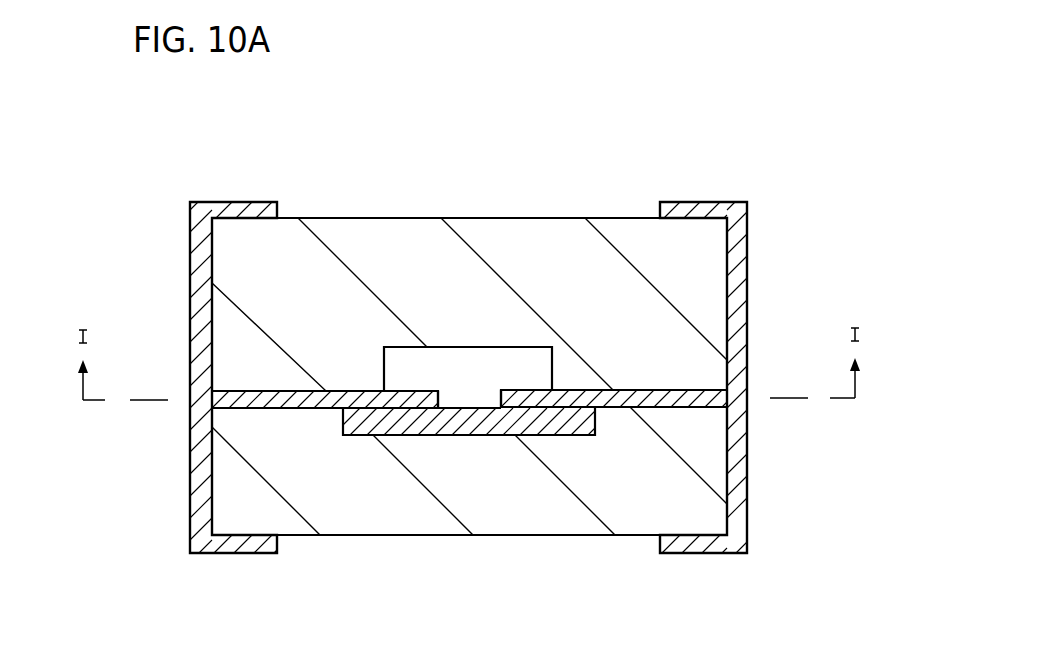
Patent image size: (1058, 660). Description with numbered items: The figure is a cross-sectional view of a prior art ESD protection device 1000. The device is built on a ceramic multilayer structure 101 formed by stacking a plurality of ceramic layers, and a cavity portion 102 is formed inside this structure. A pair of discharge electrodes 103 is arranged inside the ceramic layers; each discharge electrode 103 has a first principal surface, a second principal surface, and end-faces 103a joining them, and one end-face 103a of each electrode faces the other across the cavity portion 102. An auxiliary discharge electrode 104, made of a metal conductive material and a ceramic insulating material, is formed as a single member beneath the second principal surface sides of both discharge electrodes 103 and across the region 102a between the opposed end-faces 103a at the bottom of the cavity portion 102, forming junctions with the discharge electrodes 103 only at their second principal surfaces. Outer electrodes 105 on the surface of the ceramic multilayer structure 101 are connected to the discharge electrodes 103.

The ESD protection device 1000 is at (154, 122).
The ceramic multilayer structure 101 is at (643, 242).
The cavity portion 102 is at (530, 370).
The region between the opposed end-faces 102a is at (461, 386).
The discharge electrode 103 is at (317, 407).
The end-face 103a is at (438, 407).
The auxiliary discharge electrode 104 is at (372, 425).
The outer electrode 105 is at (200, 265).